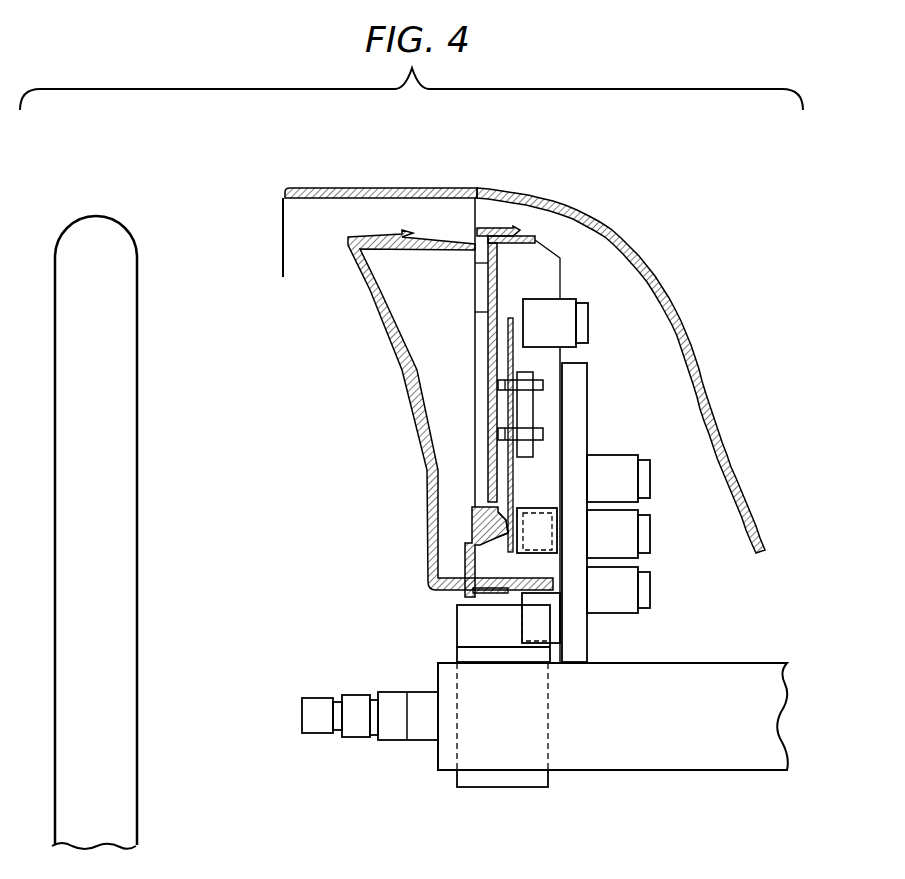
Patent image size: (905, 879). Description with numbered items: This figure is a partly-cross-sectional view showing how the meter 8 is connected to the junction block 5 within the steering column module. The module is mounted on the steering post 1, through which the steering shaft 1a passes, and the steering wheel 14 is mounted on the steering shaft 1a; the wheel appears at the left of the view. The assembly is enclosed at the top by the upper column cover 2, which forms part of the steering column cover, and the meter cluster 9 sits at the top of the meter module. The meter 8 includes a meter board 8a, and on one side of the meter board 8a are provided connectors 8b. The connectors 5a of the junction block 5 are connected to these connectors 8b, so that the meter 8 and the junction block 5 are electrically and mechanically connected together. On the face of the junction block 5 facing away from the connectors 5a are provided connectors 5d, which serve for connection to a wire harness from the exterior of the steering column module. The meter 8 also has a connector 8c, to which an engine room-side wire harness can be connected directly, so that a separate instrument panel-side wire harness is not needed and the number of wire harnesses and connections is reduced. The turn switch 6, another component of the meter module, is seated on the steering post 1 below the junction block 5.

The steering post 1 is at (627, 772).
The steering shaft 1a is at (390, 740).
The upper column cover 2 is at (610, 228).
The junction block 5 is at (580, 390).
The connectors of the junction block 5a is at (535, 507).
The connectors for connection to a wire harness 5d is at (627, 537).
The turn switch 6 is at (457, 625).
The meter 8 is at (427, 368).
The meter board 8a is at (512, 467).
The connectors 8b is at (527, 533).
The connector 8c is at (563, 323).
The meter cluster 9 is at (310, 188).
The steering wheel 14 is at (115, 743).